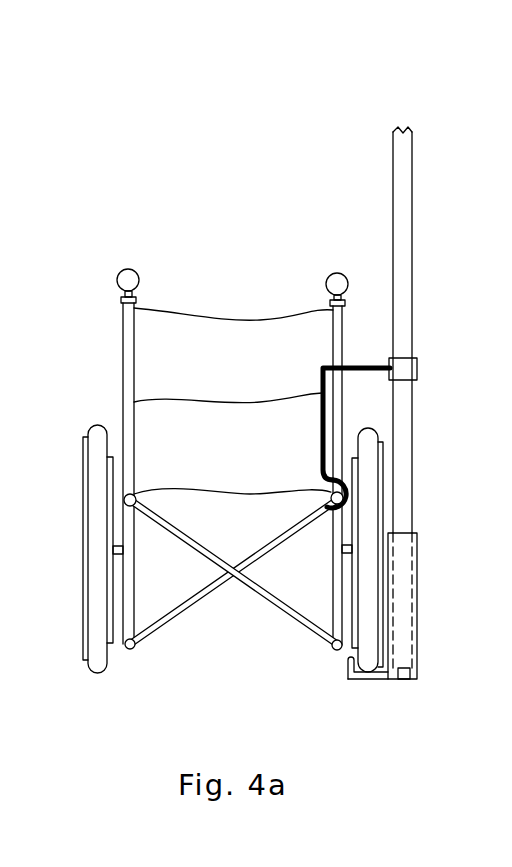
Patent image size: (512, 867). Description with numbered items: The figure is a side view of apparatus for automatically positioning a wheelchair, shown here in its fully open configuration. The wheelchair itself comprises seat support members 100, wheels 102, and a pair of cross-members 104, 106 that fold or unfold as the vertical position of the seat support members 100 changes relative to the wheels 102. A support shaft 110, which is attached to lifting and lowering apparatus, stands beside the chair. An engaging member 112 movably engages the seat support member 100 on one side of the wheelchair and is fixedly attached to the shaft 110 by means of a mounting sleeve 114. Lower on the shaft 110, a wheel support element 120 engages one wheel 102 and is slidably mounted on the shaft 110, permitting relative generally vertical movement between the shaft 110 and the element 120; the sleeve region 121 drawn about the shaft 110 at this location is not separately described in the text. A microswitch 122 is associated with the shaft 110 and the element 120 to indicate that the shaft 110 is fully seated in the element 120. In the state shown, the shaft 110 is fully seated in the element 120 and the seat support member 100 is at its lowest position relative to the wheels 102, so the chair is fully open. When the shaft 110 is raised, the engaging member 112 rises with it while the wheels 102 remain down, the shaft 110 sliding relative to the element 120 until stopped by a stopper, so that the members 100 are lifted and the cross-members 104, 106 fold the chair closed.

The seat support member 100 is at (333, 497).
The wheel 102 is at (100, 474).
The cross-member 104 is at (275, 540).
The cross-member 106 is at (187, 536).
The support shaft 110 is at (404, 196).
The engaging member 112 is at (320, 415).
The mounting sleeve 114 is at (404, 372).
The wheel support element 120 is at (386, 681).
The lower sleeve 121 is at (412, 544).
The microswitch 122 is at (412, 676).